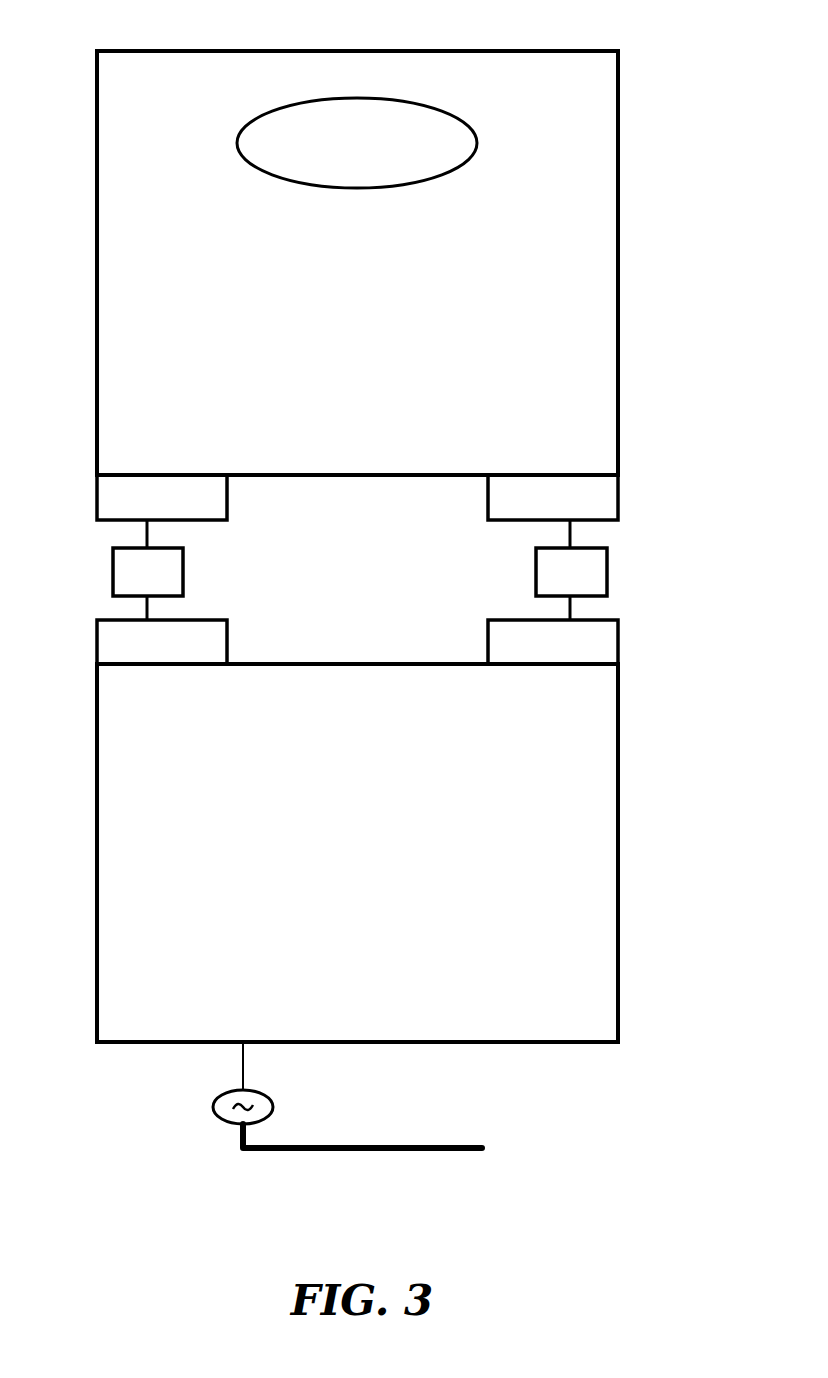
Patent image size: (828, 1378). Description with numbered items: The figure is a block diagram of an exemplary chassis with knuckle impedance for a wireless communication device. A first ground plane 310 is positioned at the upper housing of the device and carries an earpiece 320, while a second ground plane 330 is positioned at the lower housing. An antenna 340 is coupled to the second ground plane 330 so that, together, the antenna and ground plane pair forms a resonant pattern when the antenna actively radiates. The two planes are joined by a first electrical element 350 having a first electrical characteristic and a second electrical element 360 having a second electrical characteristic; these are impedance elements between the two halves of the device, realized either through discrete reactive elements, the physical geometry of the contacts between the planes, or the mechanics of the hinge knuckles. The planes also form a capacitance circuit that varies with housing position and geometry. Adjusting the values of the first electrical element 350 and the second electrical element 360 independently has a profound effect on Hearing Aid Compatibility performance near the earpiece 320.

The first ground plane 310 is at (618, 262).
The earpiece 320 is at (298, 100).
The second ground plane 330 is at (618, 852).
The antenna 340 is at (445, 1145).
The first electrical element 350 is at (607, 572).
The second electrical element 360 is at (113, 572).